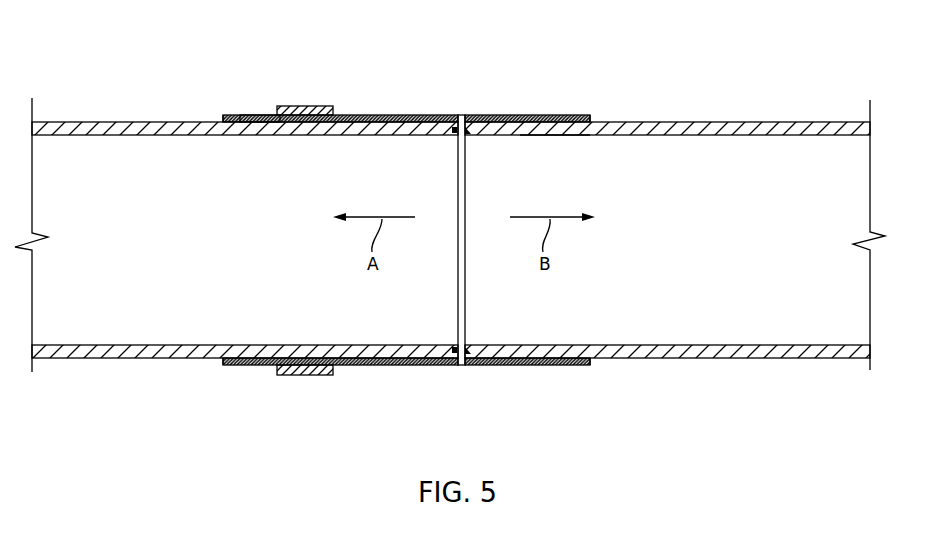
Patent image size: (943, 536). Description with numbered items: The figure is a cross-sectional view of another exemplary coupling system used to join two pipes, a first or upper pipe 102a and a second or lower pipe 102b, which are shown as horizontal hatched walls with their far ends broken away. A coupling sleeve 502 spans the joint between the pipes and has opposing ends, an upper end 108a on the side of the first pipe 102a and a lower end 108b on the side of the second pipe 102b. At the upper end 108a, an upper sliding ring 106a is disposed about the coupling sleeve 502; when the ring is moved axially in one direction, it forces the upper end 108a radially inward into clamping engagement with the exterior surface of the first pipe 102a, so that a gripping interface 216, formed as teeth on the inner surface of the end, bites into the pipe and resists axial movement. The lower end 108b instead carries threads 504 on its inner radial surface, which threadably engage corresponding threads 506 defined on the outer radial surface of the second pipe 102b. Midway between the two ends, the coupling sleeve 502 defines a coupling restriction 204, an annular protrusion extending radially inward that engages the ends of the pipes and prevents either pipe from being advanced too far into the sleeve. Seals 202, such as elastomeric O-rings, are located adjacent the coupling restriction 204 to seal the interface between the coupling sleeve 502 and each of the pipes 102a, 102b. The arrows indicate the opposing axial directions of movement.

The first pipe 102a is at (72, 122).
The second pipe 102b is at (808, 122).
The upper sliding ring 106a is at (298, 106).
The upper end 108a is at (226, 108).
The lower end 108b is at (577, 104).
The seal 202 is at (450, 137).
The coupling restriction 204 is at (462, 115).
The gripping interface 216 is at (273, 116).
The coupling sleeve 502 is at (368, 115).
The threads 504 is at (517, 115).
The threads 506 is at (558, 137).